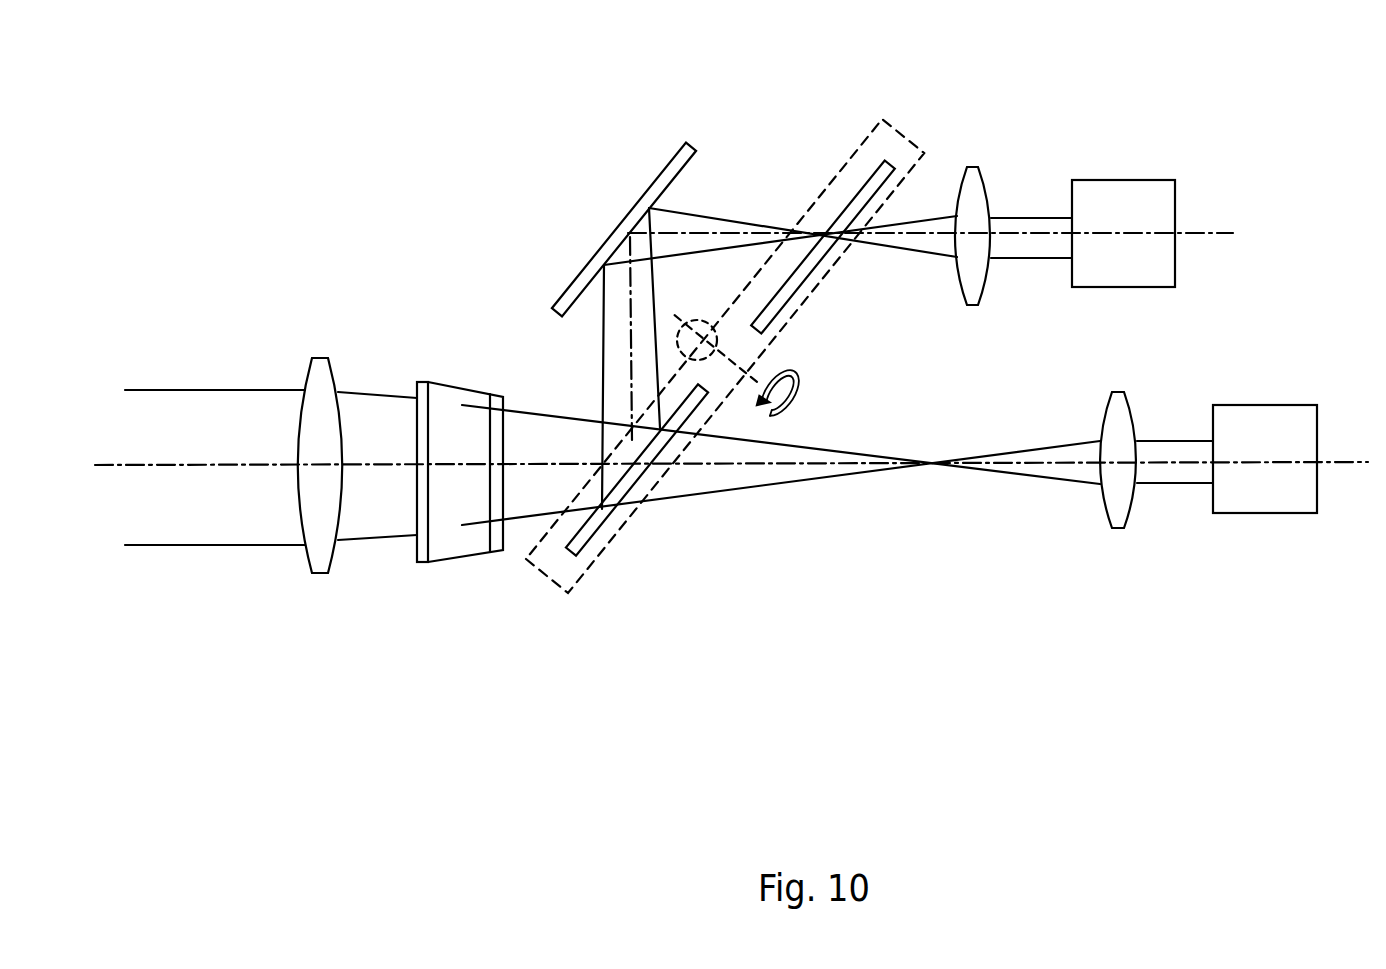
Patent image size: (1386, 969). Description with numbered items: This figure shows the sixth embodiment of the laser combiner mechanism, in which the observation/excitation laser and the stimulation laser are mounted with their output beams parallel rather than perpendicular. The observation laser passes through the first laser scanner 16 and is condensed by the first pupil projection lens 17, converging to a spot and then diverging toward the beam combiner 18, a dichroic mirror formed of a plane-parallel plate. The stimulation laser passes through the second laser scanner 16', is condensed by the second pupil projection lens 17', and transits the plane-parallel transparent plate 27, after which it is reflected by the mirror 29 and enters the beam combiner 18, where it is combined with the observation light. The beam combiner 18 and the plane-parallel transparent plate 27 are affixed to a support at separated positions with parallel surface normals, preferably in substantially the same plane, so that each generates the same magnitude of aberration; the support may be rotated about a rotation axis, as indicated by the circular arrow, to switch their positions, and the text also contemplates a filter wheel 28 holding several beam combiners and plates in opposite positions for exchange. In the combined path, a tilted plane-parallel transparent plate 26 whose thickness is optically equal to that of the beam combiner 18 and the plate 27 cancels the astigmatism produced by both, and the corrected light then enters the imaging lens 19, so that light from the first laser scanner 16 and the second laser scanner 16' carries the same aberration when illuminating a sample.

The first laser scanner 16 is at (1265, 516).
The second laser scanner 16' is at (1123, 170).
The first pupil projection lens 17 is at (1118, 523).
The second pupil projection lens 17' is at (976, 179).
The beam combiner 18 is at (597, 545).
The imaging lens 19 is at (323, 577).
The tilted plane-parallel transparent plate 26 is at (438, 564).
The plane-parallel transparent plate 27 is at (847, 203).
The filter wheel 28 is at (792, 329).
The mirror 29 is at (658, 173).